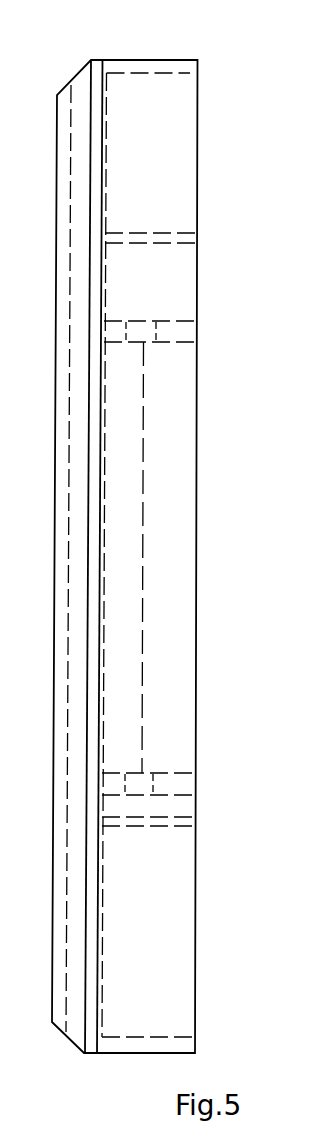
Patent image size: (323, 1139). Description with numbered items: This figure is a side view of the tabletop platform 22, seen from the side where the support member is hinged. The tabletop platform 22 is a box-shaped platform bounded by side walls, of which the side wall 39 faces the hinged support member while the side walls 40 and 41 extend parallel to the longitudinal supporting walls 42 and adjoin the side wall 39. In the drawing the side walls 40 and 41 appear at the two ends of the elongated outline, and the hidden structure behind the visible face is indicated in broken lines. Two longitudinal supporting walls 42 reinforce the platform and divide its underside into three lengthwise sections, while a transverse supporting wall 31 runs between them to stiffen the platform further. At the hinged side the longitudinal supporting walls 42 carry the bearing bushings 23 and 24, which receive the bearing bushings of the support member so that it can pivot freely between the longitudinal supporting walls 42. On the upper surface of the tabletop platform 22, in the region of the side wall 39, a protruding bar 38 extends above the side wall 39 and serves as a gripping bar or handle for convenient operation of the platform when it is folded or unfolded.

The tabletop platform 22 is at (90, 297).
The bearing bushing 23 is at (152, 343).
The bearing bushing 24 is at (145, 797).
The transverse supporting wall 31 is at (143, 505).
The protruding bar 38 is at (70, 597).
The side wall 39 is at (180, 190).
The side wall 40 is at (150, 60).
The side wall 41 is at (132, 1046).
The longitudinal supporting wall 42 is at (165, 240).